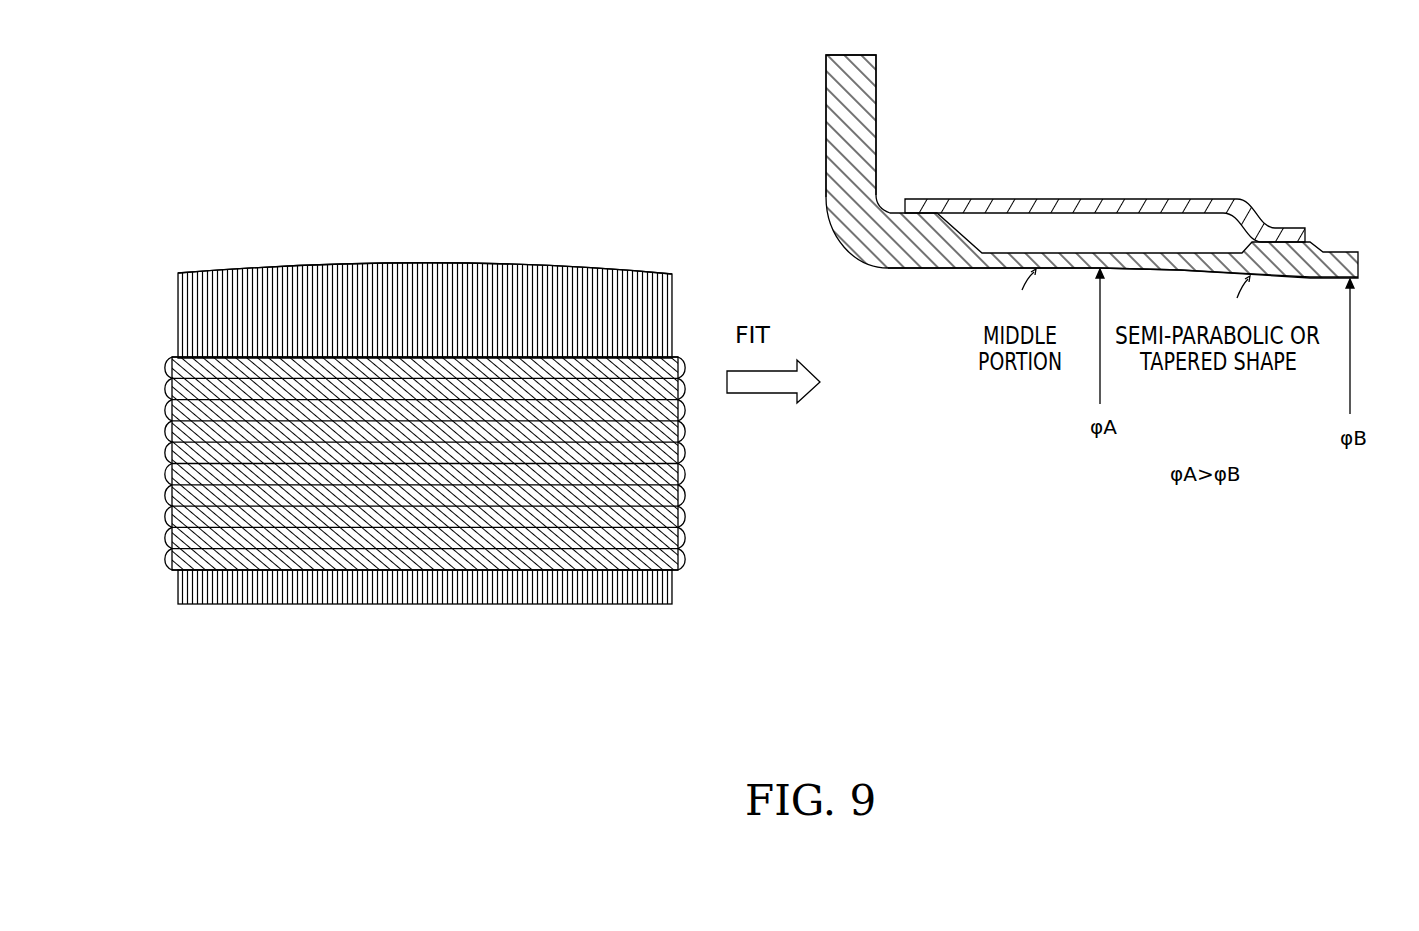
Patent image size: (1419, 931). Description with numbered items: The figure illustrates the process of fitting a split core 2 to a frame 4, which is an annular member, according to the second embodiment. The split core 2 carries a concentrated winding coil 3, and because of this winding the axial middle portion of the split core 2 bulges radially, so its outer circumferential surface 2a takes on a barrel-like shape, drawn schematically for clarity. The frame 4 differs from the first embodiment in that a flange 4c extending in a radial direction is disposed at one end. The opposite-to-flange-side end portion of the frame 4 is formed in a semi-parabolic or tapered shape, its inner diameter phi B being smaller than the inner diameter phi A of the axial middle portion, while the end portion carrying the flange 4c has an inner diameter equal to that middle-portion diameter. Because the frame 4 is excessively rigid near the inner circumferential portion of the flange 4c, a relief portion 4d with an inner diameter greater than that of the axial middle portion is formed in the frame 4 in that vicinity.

The split core 2 is at (200, 322).
The outer circumferential surface 2a is at (446, 263).
The concentrated winding coil 3 is at (670, 515).
The frame 4 is at (1074, 185).
The flange 4c is at (826, 128).
The relief portion 4d is at (930, 266).